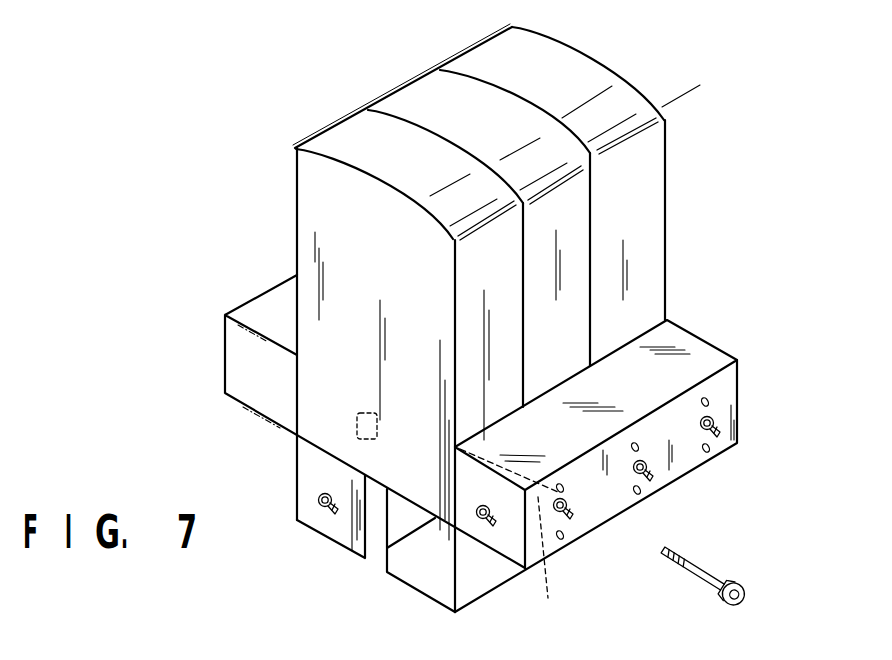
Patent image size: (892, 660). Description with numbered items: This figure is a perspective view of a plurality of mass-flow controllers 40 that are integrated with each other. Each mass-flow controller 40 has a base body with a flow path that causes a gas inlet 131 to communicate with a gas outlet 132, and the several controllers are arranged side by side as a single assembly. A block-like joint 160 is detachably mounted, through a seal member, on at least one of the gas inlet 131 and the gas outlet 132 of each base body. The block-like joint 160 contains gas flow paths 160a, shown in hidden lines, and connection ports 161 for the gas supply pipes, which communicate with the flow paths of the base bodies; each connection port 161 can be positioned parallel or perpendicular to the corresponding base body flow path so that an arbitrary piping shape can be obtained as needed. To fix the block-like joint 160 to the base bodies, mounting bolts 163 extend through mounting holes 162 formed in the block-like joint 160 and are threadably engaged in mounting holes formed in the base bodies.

The mass-flow controller 40 is at (457, 58).
The gas inlet 131 is at (357, 438).
The gas outlet 132 is at (473, 440).
The block-like joint 160 is at (256, 292).
The gas flow path 160a is at (544, 564).
The connection port 161 is at (313, 503).
The mounting hole 162 is at (562, 484).
The mounting bolt 163 is at (708, 400).